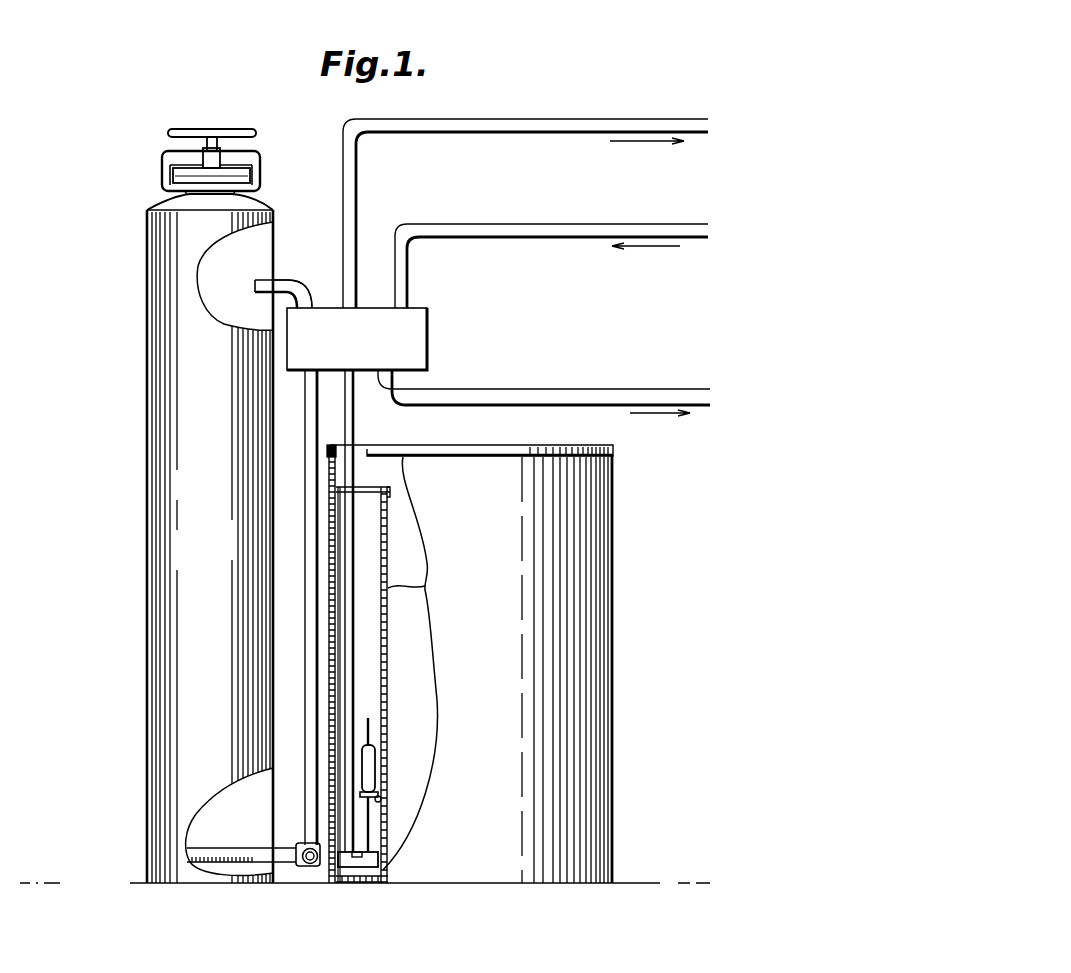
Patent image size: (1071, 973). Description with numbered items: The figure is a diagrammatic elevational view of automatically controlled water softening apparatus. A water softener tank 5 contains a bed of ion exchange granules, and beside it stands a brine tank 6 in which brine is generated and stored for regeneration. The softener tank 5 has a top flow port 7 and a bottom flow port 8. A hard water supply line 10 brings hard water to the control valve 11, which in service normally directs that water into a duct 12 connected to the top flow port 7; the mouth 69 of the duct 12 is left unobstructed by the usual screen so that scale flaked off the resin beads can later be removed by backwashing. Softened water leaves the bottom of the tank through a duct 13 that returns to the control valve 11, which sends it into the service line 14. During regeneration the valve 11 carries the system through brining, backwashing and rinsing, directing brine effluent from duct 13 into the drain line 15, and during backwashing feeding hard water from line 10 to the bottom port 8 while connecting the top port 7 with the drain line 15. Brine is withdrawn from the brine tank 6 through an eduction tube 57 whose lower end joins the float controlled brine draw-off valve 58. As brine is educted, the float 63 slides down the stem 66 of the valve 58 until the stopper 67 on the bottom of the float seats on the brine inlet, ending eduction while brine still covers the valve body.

The water softener tank 5 is at (160, 437).
The brine tank 6 is at (598, 572).
The top flow port 7 is at (283, 280).
The bottom flow port 8 is at (283, 852).
The hard water supply line 10 is at (450, 222).
The control valve 11 is at (440, 332).
The duct 12 is at (302, 300).
The duct 13 is at (310, 628).
The service line 14 is at (490, 121).
The drain line 15 is at (530, 395).
The eduction tube 57 is at (355, 439).
The brine draw-off valve 58 is at (358, 868).
The float 63 is at (370, 762).
The stem 66 is at (372, 818).
The stopper 67 is at (383, 795).
The mouth 69 is at (255, 286).